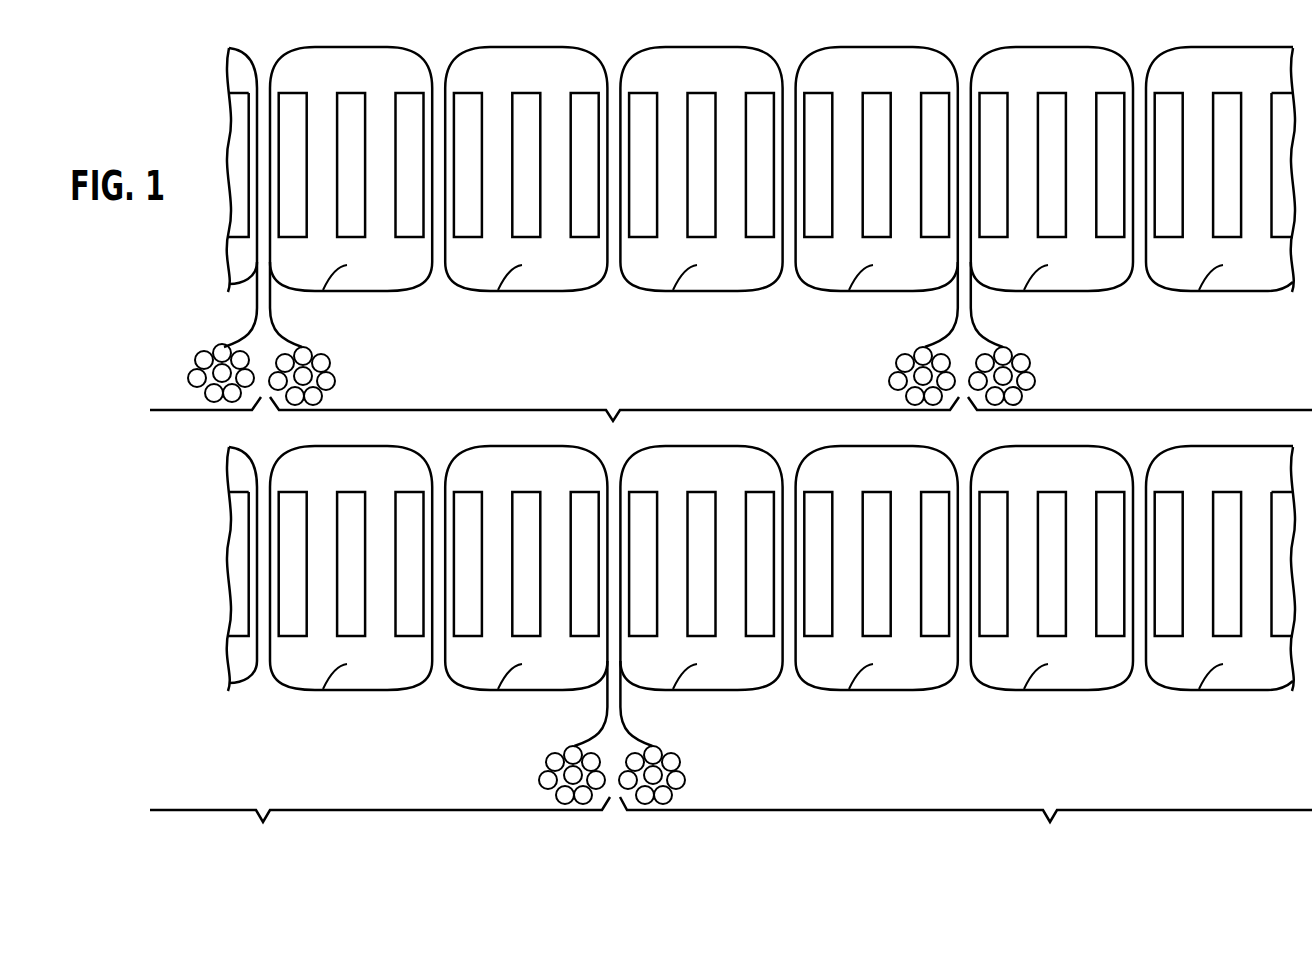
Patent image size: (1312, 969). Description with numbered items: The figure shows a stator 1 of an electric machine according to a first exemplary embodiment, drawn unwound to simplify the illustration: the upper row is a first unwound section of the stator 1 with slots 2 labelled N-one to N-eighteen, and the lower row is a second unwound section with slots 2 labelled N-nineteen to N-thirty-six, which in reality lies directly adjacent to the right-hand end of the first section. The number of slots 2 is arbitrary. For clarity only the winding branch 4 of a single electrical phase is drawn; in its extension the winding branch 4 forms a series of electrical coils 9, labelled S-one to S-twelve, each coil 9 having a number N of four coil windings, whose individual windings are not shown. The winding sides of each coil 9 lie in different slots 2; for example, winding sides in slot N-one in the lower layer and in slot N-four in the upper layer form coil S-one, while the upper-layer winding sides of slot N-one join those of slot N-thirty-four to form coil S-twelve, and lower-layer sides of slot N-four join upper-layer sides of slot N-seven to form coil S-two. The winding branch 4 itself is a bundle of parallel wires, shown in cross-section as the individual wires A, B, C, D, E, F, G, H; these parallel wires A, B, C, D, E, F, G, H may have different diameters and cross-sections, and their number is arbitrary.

The stator 1 is at (156, 102).
The slot 2 is at (315, 206).
The winding branch 4 is at (731, 626).
The electrical coil 9 is at (1224, 717).
The parallel wire A is at (216, 347).
The parallel wire B is at (240, 351).
The parallel wire C is at (251, 376).
The parallel wire D is at (235, 402).
The parallel wire E is at (213, 402).
The parallel wire F is at (190, 381).
The parallel wire G is at (196, 362).
The parallel wire H is at (214, 367).